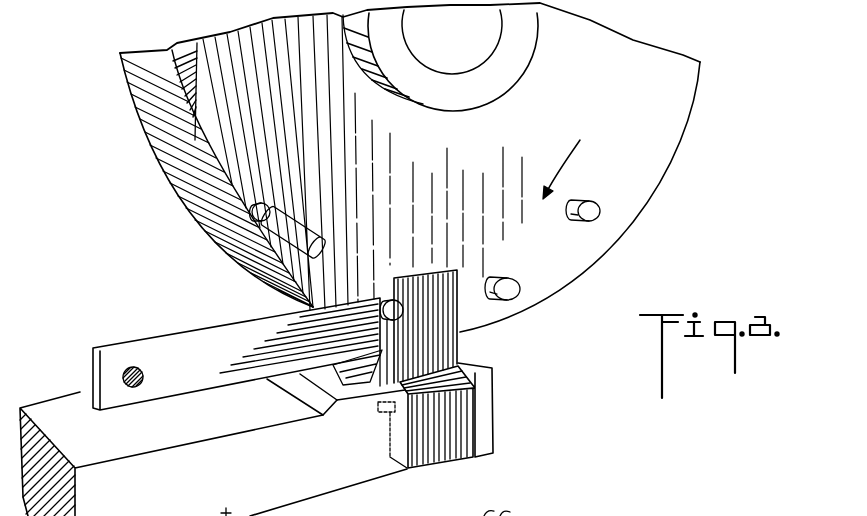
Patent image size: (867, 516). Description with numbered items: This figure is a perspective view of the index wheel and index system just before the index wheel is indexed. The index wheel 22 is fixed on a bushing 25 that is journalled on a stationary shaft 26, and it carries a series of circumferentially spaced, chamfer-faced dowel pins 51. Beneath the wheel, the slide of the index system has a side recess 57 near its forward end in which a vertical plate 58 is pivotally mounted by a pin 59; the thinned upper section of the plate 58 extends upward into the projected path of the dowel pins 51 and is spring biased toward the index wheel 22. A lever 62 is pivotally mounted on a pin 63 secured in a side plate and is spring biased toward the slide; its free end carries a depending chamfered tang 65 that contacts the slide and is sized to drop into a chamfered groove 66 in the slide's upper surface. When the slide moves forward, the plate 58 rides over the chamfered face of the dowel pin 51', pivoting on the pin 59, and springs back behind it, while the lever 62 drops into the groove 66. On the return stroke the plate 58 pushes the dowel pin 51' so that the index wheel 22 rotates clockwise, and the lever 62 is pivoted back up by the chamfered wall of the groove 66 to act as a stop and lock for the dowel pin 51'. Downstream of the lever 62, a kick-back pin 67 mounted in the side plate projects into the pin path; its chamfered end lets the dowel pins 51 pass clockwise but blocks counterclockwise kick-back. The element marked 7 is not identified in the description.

The index wheel 22 is at (183, 195).
The bushing 25 is at (493, 82).
The stationary shaft 26 is at (473, 48).
The dowel pins 51 is at (558, 233).
The dowel pin 51' is at (388, 281).
The side recess 57 is at (407, 468).
The vertical plate 58 is at (457, 340).
The pin 59 is at (383, 409).
The lever 62 is at (182, 342).
The pin 63 is at (148, 376).
The chamfered tang 65 is at (343, 378).
The chamfered groove 66 is at (213, 453).
The kick-back pin 67 is at (305, 230).
The step on base block 7 is at (235, 424).